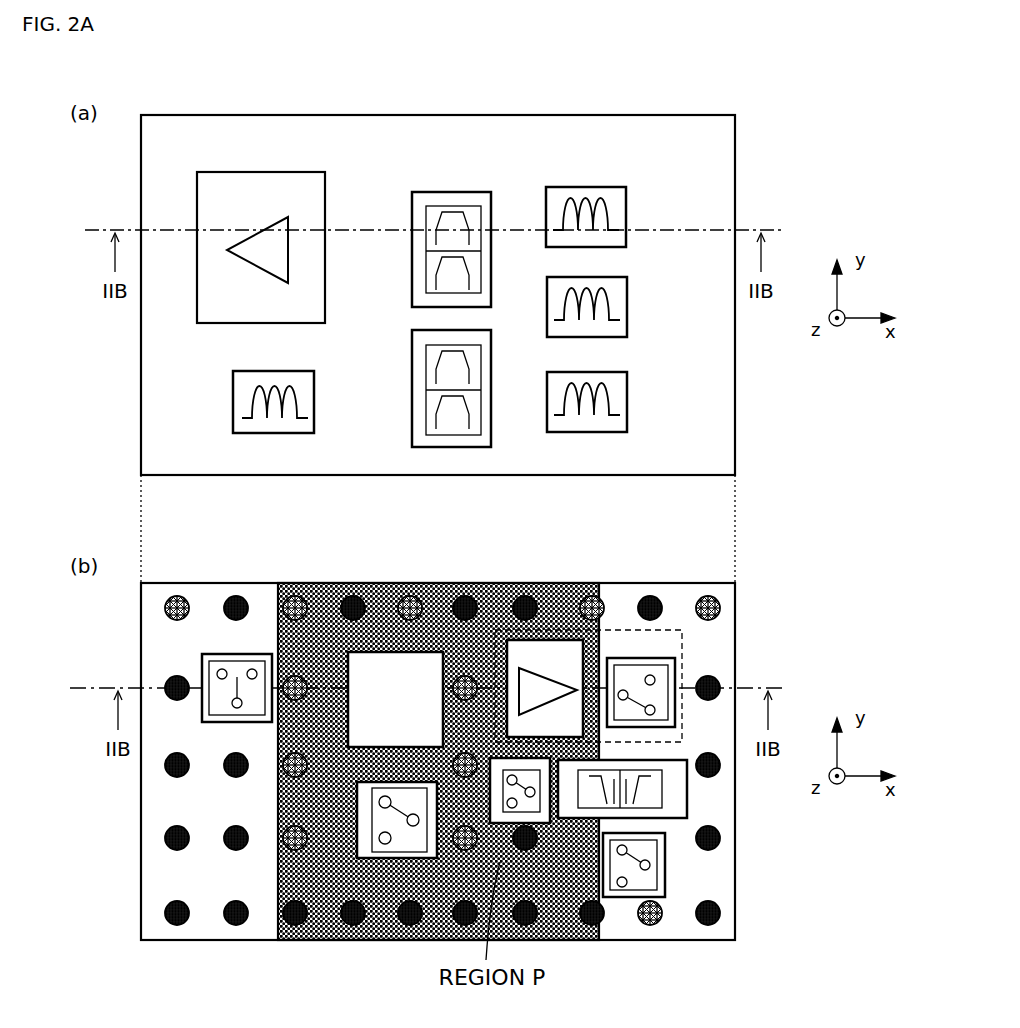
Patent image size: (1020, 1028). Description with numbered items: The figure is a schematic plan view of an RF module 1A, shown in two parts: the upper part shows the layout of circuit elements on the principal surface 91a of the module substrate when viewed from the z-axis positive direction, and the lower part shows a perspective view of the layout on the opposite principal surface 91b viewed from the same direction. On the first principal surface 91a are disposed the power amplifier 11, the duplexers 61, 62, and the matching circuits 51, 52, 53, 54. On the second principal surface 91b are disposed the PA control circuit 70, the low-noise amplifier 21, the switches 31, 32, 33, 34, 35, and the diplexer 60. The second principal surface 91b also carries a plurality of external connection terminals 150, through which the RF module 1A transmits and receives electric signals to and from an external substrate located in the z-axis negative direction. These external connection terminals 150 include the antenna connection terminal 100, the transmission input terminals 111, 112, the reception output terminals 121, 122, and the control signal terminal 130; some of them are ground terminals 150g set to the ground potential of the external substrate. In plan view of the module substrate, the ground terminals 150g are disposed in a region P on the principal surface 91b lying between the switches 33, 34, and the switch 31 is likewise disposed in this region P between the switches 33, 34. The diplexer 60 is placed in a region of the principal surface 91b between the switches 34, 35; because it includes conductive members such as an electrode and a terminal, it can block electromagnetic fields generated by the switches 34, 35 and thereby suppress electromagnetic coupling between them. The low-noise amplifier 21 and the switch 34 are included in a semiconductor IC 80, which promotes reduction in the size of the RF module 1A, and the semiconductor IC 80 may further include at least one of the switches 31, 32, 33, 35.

The RF module 1A is at (505, 288).
The principal surface 91a is at (737, 160).
The principal surface 91b is at (728, 635).
The power amplifier 11 is at (295, 172).
The duplexer 61 is at (470, 195).
The duplexer 62 is at (480, 448).
The matching circuit 51 is at (628, 280).
The matching circuit 52 is at (575, 433).
The matching circuit 53 is at (316, 405).
The matching circuit 54 is at (590, 190).
The transmission input terminal 111 is at (183, 598).
The transmission input terminal 112 is at (292, 598).
The reception output terminal 121 is at (600, 598).
The reception output terminal 122 is at (705, 597).
The control signal terminal 130 is at (413, 597).
The external connection terminals 150 is at (168, 848).
The ground terminals 150g is at (296, 827).
The antenna connection terminal 100 is at (652, 925).
The switch 33 is at (228, 654).
The PA control circuit 70 is at (390, 652).
The low-noise amplifier 21 is at (585, 658).
The switch 34 is at (642, 660).
The semiconductor IC 80 is at (611, 686).
The switch 31 is at (430, 862).
The switch 32 is at (552, 826).
The switch 35 is at (667, 853).
The diplexer 60 is at (688, 790).